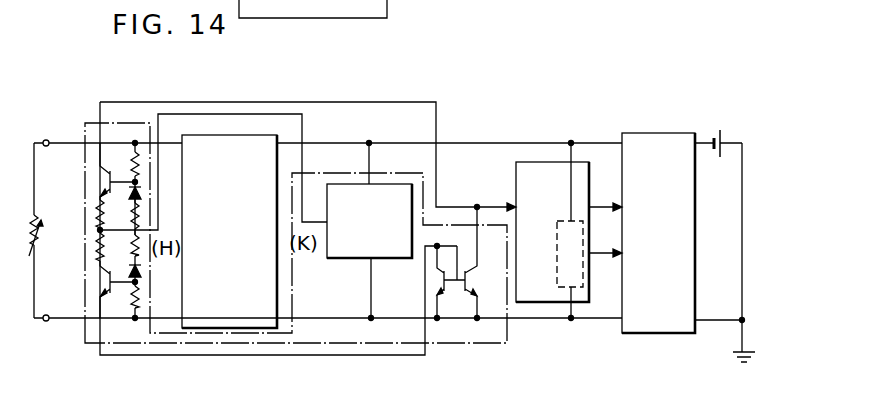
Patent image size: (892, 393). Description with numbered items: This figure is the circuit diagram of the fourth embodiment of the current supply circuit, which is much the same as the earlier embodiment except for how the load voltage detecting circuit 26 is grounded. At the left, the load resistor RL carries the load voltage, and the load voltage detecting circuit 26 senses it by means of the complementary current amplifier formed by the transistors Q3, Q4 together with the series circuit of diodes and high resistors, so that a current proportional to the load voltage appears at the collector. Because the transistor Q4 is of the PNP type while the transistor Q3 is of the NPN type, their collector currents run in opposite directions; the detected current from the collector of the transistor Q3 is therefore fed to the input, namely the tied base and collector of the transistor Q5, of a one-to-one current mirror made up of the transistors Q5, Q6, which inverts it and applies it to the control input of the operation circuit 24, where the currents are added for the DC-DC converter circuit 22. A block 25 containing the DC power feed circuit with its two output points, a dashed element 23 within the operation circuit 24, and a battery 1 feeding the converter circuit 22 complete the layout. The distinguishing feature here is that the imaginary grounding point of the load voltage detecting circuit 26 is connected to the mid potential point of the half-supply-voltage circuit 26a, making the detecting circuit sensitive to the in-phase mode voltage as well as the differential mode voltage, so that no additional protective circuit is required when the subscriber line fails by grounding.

The battery / power source 1 is at (717, 133).
The DC-DC converter circuit 22 is at (660, 133).
The resistor element 23 is at (560, 257).
The operation circuit 24 is at (540, 162).
The DC power feed circuit 25 is at (253, 135).
The load voltage detecting circuit 26 is at (108, 124).
The VBB'/2 circuit 26a is at (386, 184).
The transistor Q3 is at (99, 282).
The transistor Q4 is at (99, 182).
The transistor Q5 is at (433, 280).
The transistor Q6 is at (479, 281).
The load resistor RL is at (49, 230).